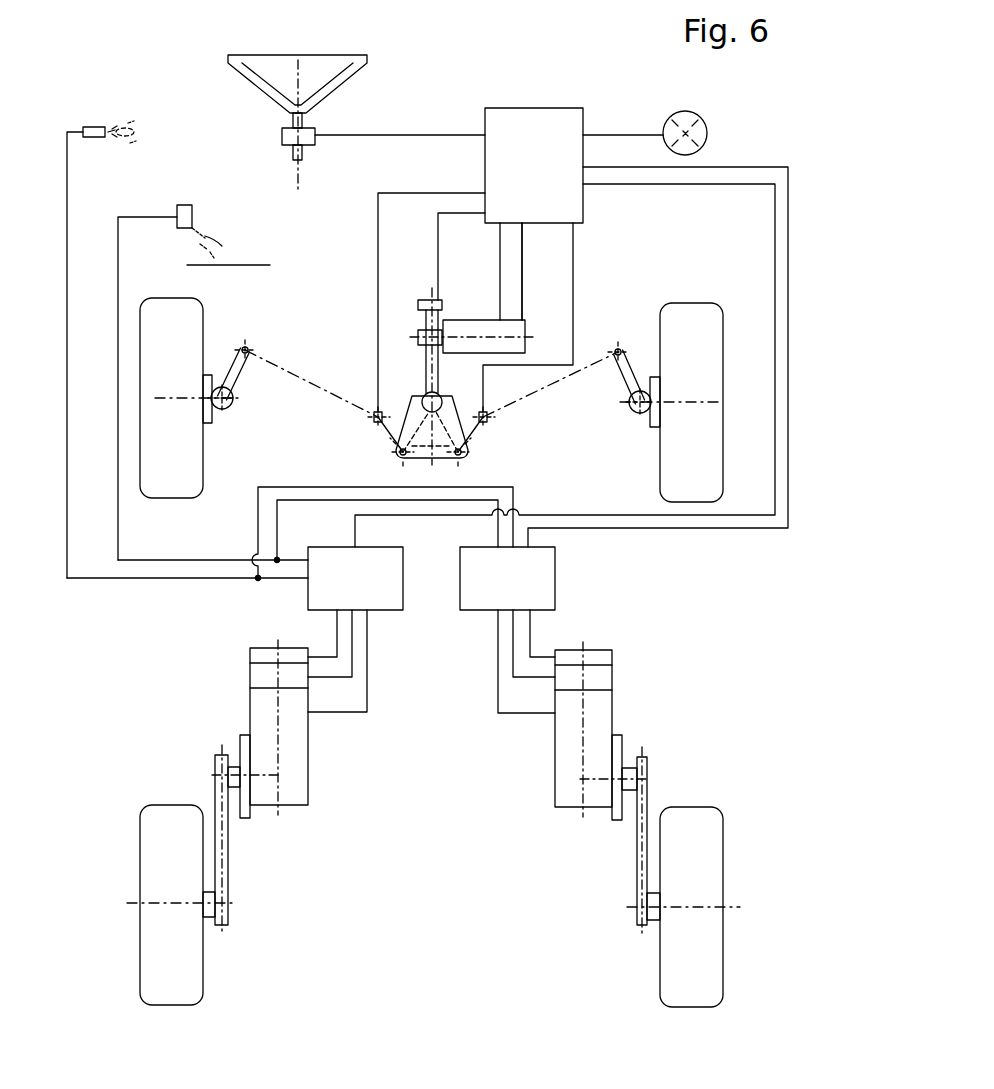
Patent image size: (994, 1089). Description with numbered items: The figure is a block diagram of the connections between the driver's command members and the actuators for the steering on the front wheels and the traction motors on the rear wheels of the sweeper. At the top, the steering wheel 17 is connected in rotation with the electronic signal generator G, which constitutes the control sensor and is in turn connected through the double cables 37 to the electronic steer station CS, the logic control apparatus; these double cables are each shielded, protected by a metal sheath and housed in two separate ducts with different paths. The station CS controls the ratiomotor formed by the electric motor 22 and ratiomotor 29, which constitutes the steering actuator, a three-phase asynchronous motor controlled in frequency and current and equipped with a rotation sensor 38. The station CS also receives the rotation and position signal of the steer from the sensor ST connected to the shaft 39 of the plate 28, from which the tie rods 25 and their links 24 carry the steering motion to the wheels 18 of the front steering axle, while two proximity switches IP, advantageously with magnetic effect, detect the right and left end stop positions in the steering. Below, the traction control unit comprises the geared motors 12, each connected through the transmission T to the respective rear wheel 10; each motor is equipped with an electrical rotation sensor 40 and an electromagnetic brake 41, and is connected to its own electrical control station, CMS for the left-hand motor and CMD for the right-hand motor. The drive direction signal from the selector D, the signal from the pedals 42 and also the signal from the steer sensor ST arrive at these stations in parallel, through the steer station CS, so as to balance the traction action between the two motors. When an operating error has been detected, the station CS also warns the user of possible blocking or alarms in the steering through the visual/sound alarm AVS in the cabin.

The wheels 10 is at (167, 820).
The electrical traction motor 12 is at (295, 752).
The steering wheel 17 is at (337, 58).
The wheels 18 is at (157, 342).
The electric motor 22 is at (473, 325).
The links 24 is at (207, 370).
The tie rods 25 is at (283, 372).
The plate 28 is at (430, 457).
The ratiomotor 29 is at (420, 333).
The double cables 37 is at (410, 135).
The rotation sensor 38 is at (522, 332).
The shaft 39 is at (437, 375).
The electrical rotation sensor 40 is at (265, 655).
The electromagnetic brake 41 is at (262, 675).
The pedals 42 is at (194, 231).
The selector D is at (95, 127).
The electronic signal generator G is at (282, 135).
The steer sensor ST is at (432, 300).
The proximity switches IP is at (403, 395).
The electronic steer station CS is at (534, 165).
The visual/sound alarm AVS is at (705, 122).
The electrical control station CMS is at (355, 629).
The electrical control station CMD is at (507, 630).
The transmission T is at (228, 868).